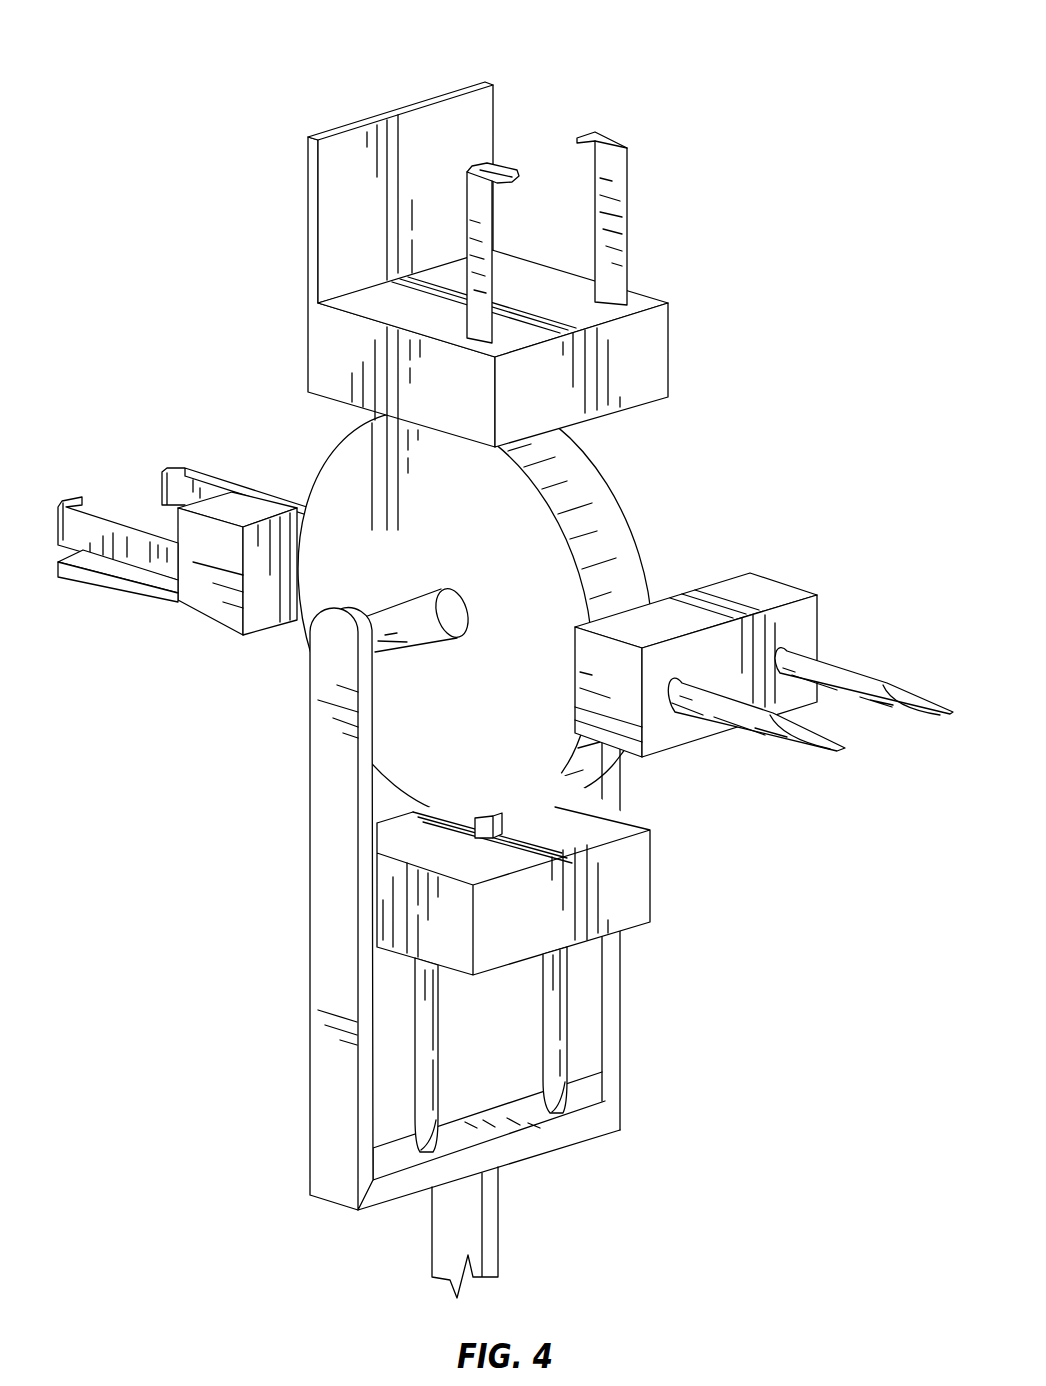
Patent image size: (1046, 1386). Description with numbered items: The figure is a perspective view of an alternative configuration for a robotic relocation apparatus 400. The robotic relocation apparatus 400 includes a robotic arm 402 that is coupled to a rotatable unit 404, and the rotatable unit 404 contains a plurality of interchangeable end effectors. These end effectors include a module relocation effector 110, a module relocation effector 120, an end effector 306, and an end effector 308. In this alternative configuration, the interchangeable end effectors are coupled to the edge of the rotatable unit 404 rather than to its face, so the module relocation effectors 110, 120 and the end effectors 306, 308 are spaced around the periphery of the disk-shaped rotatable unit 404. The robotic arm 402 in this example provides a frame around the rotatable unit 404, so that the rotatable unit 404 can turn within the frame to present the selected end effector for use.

The robotic relocation apparatus 400 is at (120, 102).
The module relocation effector 110 is at (215, 622).
The module relocation effector 120 is at (497, 110).
The robotic arm 402 is at (311, 1010).
The rotatable unit 404 is at (613, 498).
The end effector 306 is at (652, 915).
The end effector 308 is at (680, 745).